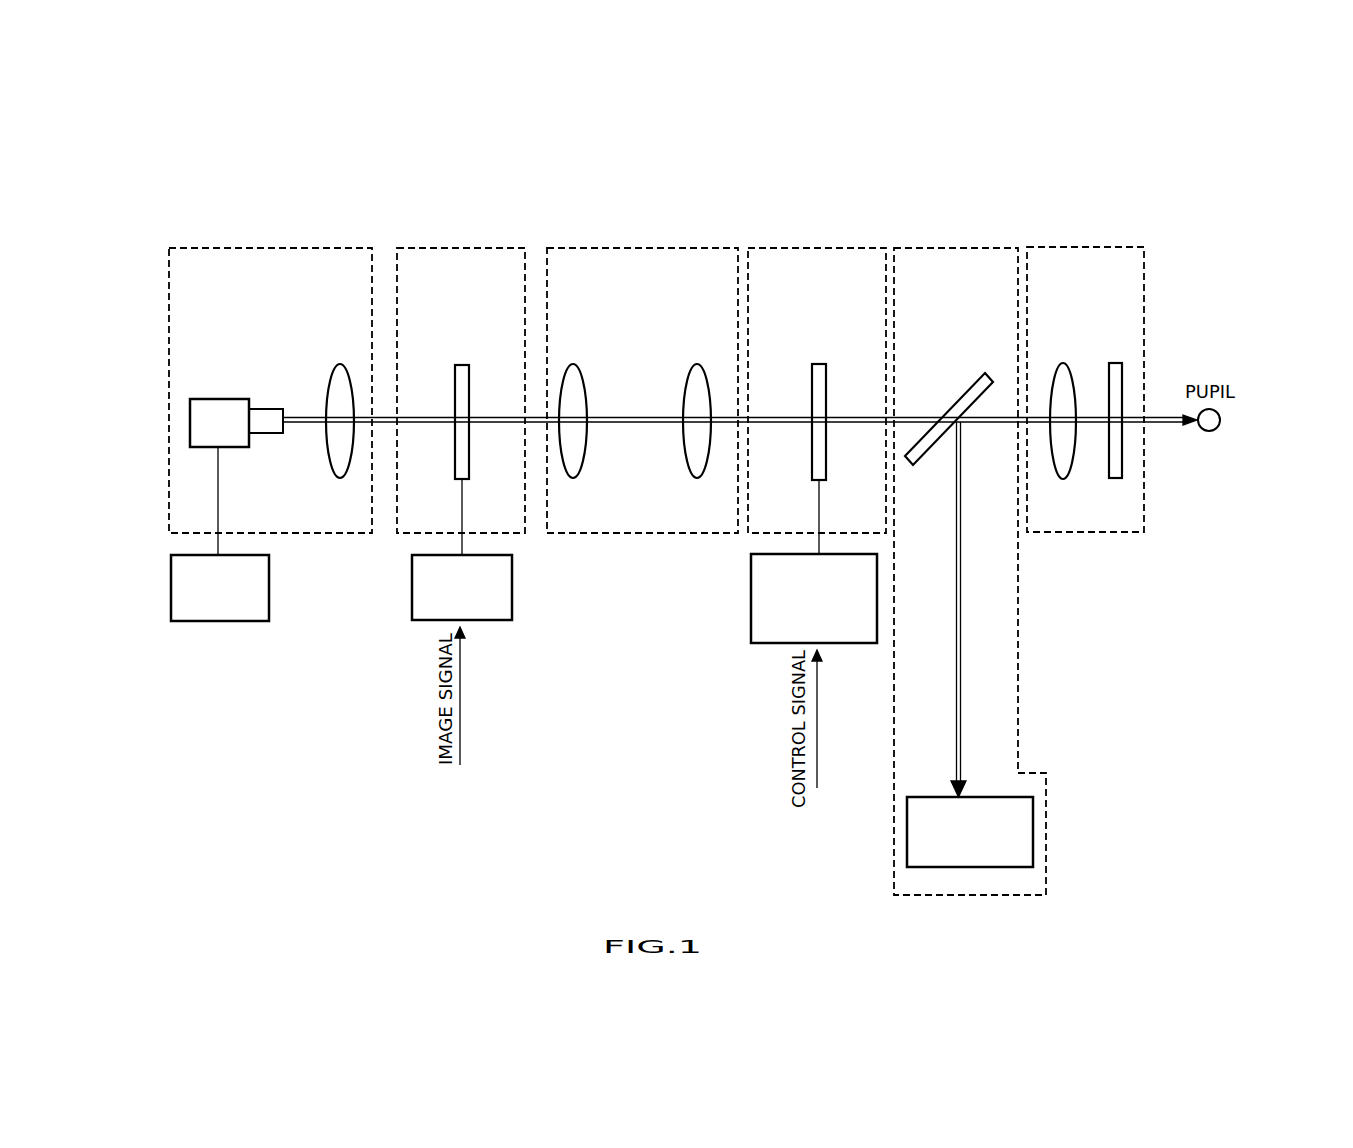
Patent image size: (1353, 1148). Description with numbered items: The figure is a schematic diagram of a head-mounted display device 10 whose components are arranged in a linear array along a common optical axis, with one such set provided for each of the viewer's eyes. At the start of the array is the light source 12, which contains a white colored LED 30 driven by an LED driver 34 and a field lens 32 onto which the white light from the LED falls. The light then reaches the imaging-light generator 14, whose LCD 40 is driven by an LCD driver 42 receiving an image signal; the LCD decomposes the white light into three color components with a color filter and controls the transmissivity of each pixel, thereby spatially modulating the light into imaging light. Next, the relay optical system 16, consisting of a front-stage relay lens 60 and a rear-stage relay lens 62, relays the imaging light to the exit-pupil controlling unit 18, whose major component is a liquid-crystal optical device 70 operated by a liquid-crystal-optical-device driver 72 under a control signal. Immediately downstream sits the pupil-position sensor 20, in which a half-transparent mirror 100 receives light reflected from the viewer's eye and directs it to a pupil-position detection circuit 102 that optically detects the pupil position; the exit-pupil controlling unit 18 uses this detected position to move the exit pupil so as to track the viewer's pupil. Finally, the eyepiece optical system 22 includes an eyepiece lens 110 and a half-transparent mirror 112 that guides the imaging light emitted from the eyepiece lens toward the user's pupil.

The head-mounted display device 10 is at (1132, 115).
The light source 12 is at (178, 248).
The imaging-light generator 14 is at (412, 258).
The relay optical system 16 is at (580, 258).
The exit-pupil controlling unit 18 is at (772, 257).
The pupil-position sensor 20 is at (913, 258).
The eyepiece optical system 22 is at (1048, 255).
The white colored LED 30 is at (207, 409).
The field lens 32 is at (338, 387).
The LED driver 34 is at (180, 570).
The LCD 40 is at (460, 375).
The LCD driver 42 is at (420, 582).
The front-stage relay lens 60 is at (570, 377).
The rear-stage relay lens 62 is at (697, 378).
The liquid-crystal optical device 70 is at (818, 375).
The liquid-crystal-optical-device driver 72 is at (763, 580).
The half-transparent mirror 100 is at (973, 392).
The pupil-position detection circuit 102 is at (923, 807).
The eyepiece lens 110 is at (1067, 372).
The half-transparent mirror 112 is at (1118, 373).